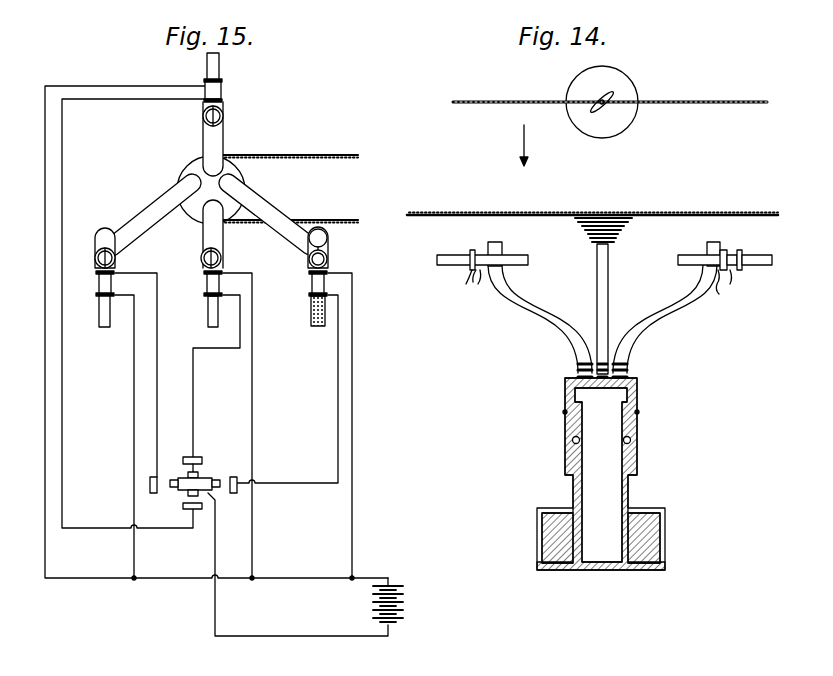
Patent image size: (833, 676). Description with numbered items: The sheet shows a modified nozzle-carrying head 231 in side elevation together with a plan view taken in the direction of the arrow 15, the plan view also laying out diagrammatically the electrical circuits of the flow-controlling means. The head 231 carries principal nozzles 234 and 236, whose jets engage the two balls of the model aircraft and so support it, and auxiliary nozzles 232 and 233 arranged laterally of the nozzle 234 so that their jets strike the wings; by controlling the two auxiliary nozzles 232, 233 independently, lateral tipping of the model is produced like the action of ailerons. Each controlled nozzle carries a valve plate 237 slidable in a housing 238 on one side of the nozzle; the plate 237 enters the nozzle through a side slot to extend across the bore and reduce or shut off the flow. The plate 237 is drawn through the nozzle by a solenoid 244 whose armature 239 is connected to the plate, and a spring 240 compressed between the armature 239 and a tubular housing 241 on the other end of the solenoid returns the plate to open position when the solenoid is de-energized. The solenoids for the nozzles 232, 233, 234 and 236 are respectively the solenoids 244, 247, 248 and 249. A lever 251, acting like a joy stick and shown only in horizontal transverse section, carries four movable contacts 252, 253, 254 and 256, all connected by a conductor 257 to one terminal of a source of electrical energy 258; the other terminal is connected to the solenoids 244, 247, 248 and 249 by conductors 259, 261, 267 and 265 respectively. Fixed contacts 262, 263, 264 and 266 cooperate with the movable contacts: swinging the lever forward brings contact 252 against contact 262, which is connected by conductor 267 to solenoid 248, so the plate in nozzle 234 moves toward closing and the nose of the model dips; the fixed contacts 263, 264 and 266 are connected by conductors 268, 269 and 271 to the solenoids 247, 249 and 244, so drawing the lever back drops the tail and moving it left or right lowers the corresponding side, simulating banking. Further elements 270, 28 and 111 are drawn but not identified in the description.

In FIG. 14, the arrow 15 is at (512, 145).
In FIG. 14, the plate 28 is at (735, 213).
In FIG. 14, the fan / propeller 111 is at (638, 80).
In FIG. 15, the nozzle-carrying head 231 is at (195, 166).
In FIG. 14, the nozzle-carrying head 231 is at (565, 433).
In FIG. 15, the auxiliary nozzle 232 is at (328, 253).
In FIG. 14, the auxiliary nozzle 232 is at (716, 248).
In FIG. 15, the auxiliary nozzle 233 is at (115, 262).
In FIG. 14, the auxiliary nozzle 233 is at (497, 247).
In FIG. 15, the principal nozzle 234 is at (221, 260).
In FIG. 14, the principal nozzle 234 is at (600, 280).
In FIG. 15, the principal nozzle 236 is at (223, 113).
In FIG. 15, the valve plate 237 is at (320, 232).
In FIG. 15, the housing 238 is at (223, 250).
In FIG. 14, the housing 238 is at (690, 257).
In FIG. 15, the armature 239 is at (327, 263).
In FIG. 15, the spring 240 is at (326, 320).
In FIG. 15, the tubular housing 241 is at (104, 318).
In FIG. 15, the solenoid 244 is at (318, 285).
In FIG. 14, the solenoid 244 is at (729, 258).
In FIG. 15, the solenoid 247 is at (111, 285).
In FIG. 15, the solenoid 248 is at (219, 285).
In FIG. 14, the solenoid 248 is at (757, 264).
In FIG. 15, the solenoid 249 is at (218, 90).
In FIG. 15, the lever 251 is at (200, 480).
In FIG. 15, the electrical contact 252 is at (188, 477).
In FIG. 15, the electrical contact 253 is at (176, 488).
In FIG. 15, the electrical contact 254 is at (196, 508).
In FIG. 15, the electrical contact 256 is at (214, 490).
In FIG. 15, the conductor 257 is at (218, 615).
In FIG. 15, the source of electrical energy 258 is at (392, 607).
In FIG. 15, the conductor 259 is at (352, 411).
In FIG. 14, the conductor 259 is at (733, 283).
In FIG. 15, the conductor 261 is at (134, 441).
In FIG. 15, the contact 262 is at (196, 457).
In FIG. 15, the contact 263 is at (150, 487).
In FIG. 15, the contact 264 is at (190, 507).
In FIG. 15, the conductor 265 is at (45, 441).
In FIG. 15, the contact 266 is at (237, 483).
In FIG. 15, the conductor 267 is at (193, 371).
In FIG. 15, the conductor 268 is at (157, 401).
In FIG. 15, the conductor 269 is at (90, 530).
In FIG. 15, the conductor 270 is at (252, 411).
In FIG. 15, the conductor 271 is at (338, 371).
In FIG. 14, the conductor 271 is at (720, 292).